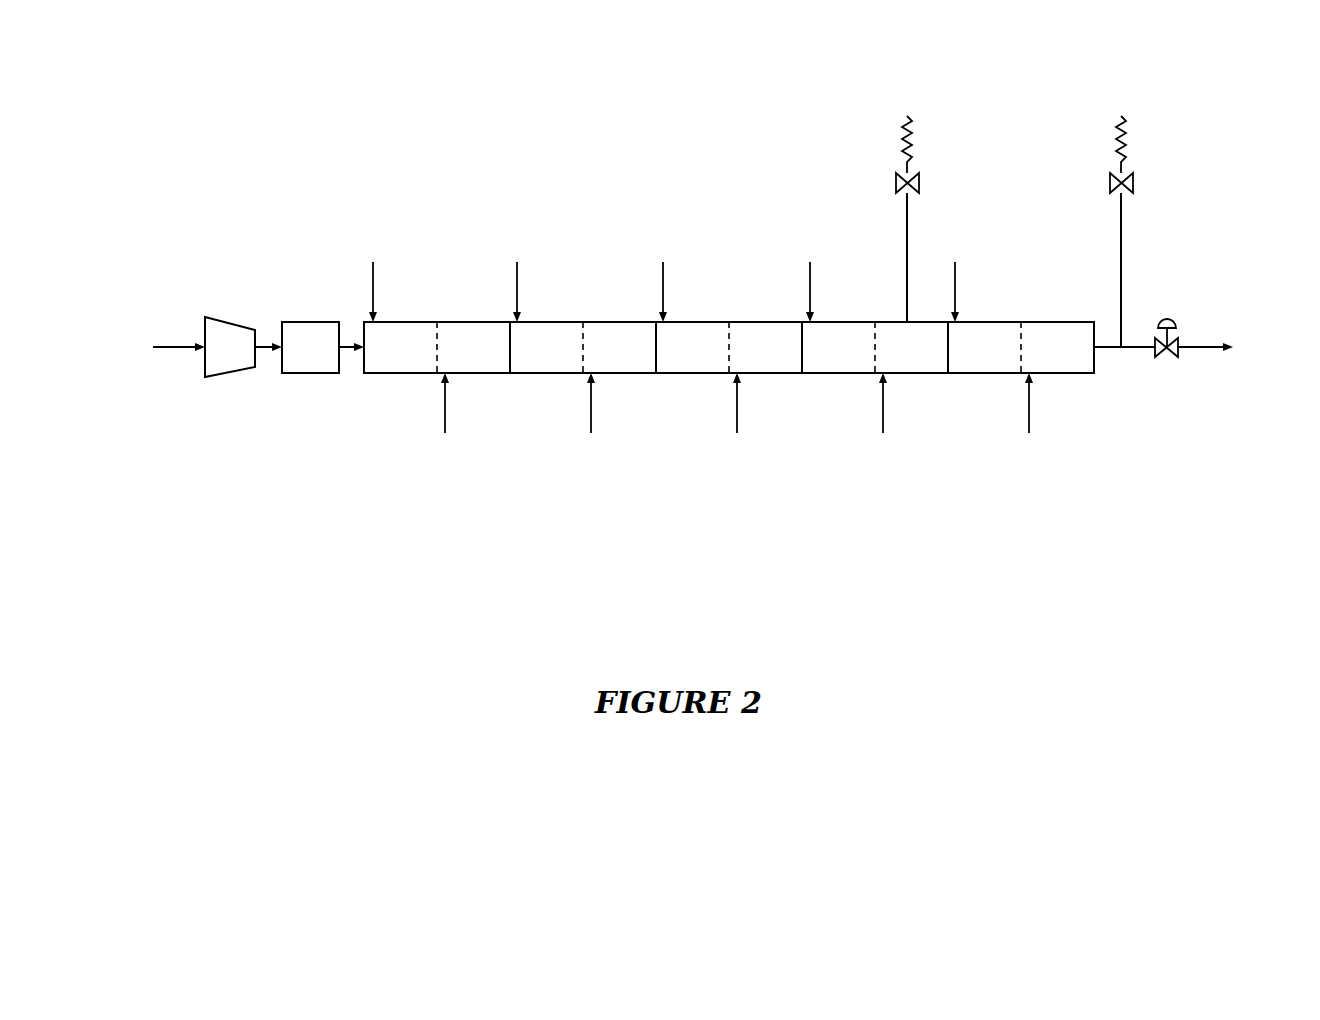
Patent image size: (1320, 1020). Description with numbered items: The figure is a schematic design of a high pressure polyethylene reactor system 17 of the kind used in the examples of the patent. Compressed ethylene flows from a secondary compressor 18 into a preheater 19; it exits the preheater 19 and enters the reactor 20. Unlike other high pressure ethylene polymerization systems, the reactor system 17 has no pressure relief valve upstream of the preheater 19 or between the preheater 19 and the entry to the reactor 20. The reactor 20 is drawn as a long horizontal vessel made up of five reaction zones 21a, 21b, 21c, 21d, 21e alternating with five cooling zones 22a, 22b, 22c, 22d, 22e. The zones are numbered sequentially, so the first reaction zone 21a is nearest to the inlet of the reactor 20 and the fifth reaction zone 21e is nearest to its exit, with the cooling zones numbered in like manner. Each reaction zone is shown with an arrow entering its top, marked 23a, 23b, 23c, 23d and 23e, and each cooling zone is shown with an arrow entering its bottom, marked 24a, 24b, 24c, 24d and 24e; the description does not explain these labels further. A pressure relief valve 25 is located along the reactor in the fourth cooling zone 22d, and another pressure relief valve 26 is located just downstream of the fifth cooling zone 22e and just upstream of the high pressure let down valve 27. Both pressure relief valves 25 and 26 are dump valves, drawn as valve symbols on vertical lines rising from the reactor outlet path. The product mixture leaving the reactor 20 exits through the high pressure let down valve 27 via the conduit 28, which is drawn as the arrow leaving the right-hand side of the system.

The reactor system 17 is at (349, 100).
The secondary compressor 18 is at (232, 370).
The preheater 19 is at (303, 322).
The reactor 20 is at (683, 373).
The reaction zone 21a is at (380, 362).
The reaction zone 21b is at (526, 362).
The reaction zone 21c is at (672, 362).
The reaction zone 21d is at (818, 362).
The reaction zone 21e is at (964, 362).
The cooling zone 22a is at (452, 362).
The cooling zone 22b is at (598, 362).
The cooling zone 22c is at (744, 362).
The cooling zone 22d is at (890, 362).
The cooling zone 22e is at (1036, 362).
The feed inlet 23a is at (350, 253).
The feed inlet 23b is at (494, 253).
The feed inlet 23c is at (640, 253).
The feed inlet 23d is at (787, 253).
The feed inlet 23e is at (932, 253).
The feed inlet 24a is at (422, 468).
The feed inlet 24b is at (568, 468).
The feed inlet 24c is at (714, 468).
The feed inlet 24d is at (860, 468).
The feed inlet 24e is at (1006, 468).
The pressure relief valve 25 is at (896, 182).
The pressure relief valve 26 is at (1110, 183).
The high pressure let down valve 27 is at (1173, 357).
The conduit 28 is at (1200, 342).